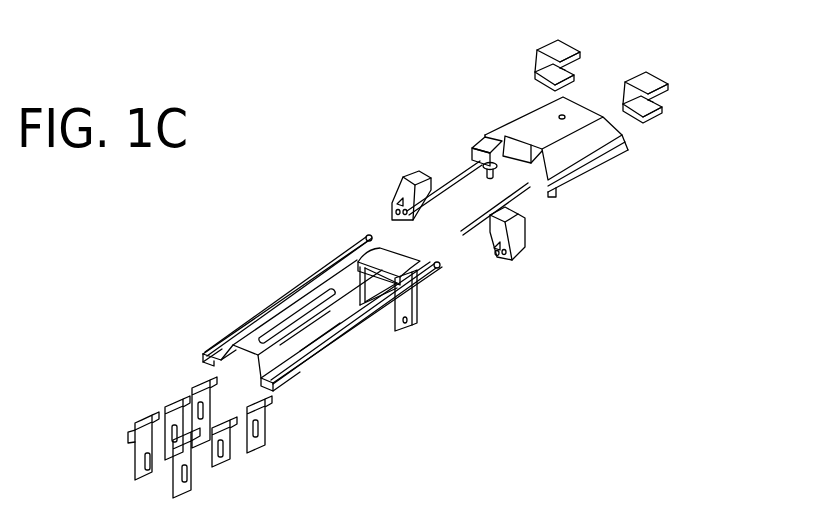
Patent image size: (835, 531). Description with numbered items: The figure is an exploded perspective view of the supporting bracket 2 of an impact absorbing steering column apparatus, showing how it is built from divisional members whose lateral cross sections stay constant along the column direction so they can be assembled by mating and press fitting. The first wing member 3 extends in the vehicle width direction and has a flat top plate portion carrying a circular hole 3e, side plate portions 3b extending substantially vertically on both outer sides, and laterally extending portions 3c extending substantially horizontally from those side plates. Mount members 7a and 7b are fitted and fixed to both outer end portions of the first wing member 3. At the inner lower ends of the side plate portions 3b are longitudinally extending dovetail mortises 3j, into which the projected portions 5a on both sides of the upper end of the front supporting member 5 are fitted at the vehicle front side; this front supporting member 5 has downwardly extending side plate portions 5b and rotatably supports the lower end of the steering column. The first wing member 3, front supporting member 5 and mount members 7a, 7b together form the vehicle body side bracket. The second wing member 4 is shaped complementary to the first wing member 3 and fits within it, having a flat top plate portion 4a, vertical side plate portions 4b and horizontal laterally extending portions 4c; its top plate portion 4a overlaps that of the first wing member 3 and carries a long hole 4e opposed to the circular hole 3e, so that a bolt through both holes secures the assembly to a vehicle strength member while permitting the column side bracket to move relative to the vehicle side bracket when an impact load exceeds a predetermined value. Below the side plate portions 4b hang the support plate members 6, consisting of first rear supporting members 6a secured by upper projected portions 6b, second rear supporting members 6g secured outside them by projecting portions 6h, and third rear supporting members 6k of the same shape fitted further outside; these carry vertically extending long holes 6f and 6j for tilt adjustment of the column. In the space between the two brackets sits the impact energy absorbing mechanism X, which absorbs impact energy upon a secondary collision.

The supporting bracket 2 is at (298, 244).
The first wing member 3 is at (596, 176).
The side plate portions 3b is at (482, 145).
The laterally extending portions 3c is at (505, 128).
The circular hole 3e is at (565, 115).
The dovetail mortises 3j is at (542, 190).
The second wing member 4 is at (298, 330).
The top plate portion 4a is at (242, 344).
The side plate portions 4b is at (334, 313).
The laterally extending portions 4c is at (318, 342).
The long hole 4e is at (289, 316).
The front supporting member 5 is at (405, 334).
The projected portions 5a is at (364, 241).
The side plate portions 5b is at (415, 305).
The support plate members 6 is at (257, 455).
The first rear supporting members 6a is at (142, 442).
The upper projected portions 6b is at (148, 418).
The long hole 6f is at (138, 482).
The second rear supporting members 6g is at (235, 447).
The projecting portions 6h is at (258, 438).
The long hole 6j is at (236, 470).
The third rear supporting members 6k is at (203, 386).
The mount member 7a is at (406, 178).
The mount member 7b is at (556, 48).
The impact energy absorbing mechanism X is at (450, 200).